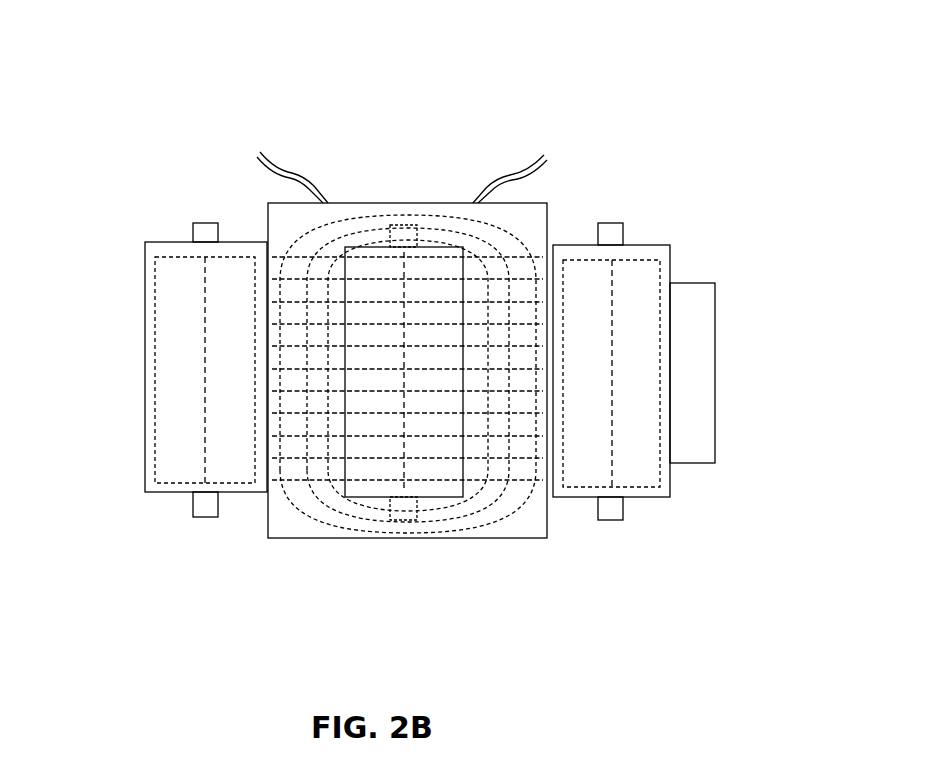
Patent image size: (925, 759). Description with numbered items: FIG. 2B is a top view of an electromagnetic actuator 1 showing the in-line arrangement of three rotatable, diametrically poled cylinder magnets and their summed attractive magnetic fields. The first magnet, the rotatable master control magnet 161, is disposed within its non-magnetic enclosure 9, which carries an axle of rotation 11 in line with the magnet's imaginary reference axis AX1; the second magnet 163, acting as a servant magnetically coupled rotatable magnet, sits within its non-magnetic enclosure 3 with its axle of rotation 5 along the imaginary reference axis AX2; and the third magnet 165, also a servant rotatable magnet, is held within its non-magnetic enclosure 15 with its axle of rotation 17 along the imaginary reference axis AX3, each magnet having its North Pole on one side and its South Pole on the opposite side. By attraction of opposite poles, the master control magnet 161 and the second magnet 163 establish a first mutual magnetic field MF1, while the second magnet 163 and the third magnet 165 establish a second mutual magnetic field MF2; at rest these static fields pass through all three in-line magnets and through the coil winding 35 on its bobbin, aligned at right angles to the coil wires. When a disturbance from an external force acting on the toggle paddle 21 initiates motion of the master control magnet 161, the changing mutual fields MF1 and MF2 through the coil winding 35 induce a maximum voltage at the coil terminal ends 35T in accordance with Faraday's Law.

The electromagnetic actuator 1 is at (540, 520).
The non-magnetic enclosure 3 is at (336, 203).
The axle of rotation 5 is at (412, 228).
The non-magnetic enclosure 9 is at (673, 487).
The axle of rotation 11 is at (623, 236).
The non-magnetic enclosure 15 is at (147, 290).
The axle of rotation 17 is at (195, 232).
The toggle paddle 21 is at (697, 298).
The coil winding 35 is at (290, 500).
The coil terminal ends 35T is at (300, 180).
The master control magnet 161 is at (660, 413).
The second magnet 163 is at (367, 500).
The third magnet 165 is at (150, 393).
The first mutual magnetic field MF1 is at (547, 255).
The second mutual magnetic field MF2 is at (268, 252).
The imaginary reference axis AX1 is at (610, 312).
The imaginary reference axis AX2 is at (400, 410).
The imaginary reference axis AX3 is at (205, 307).